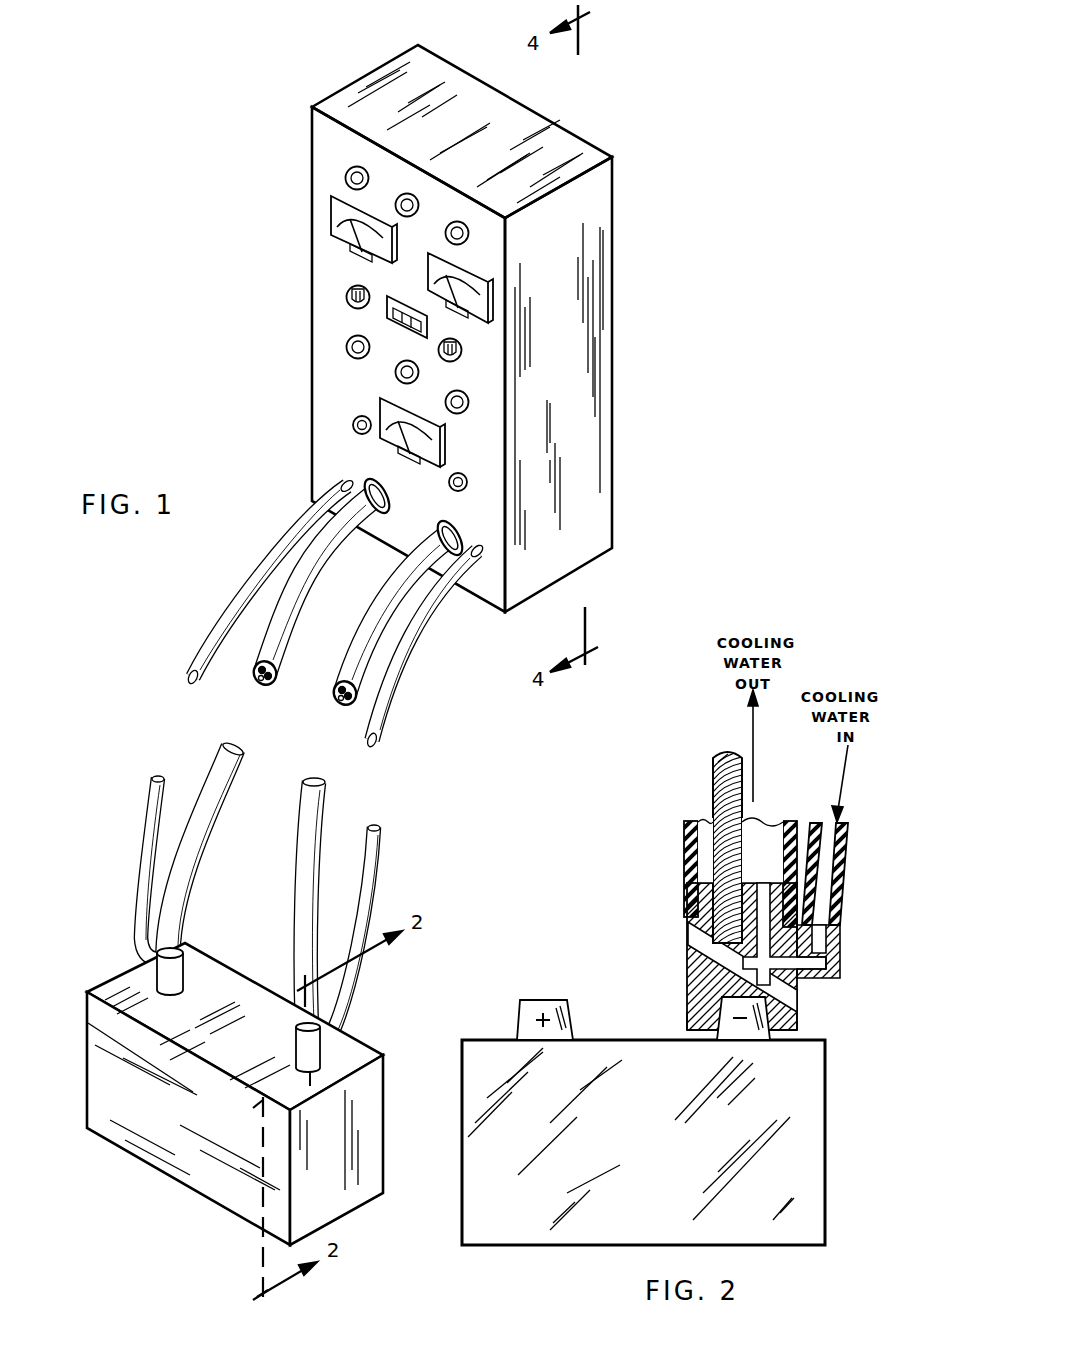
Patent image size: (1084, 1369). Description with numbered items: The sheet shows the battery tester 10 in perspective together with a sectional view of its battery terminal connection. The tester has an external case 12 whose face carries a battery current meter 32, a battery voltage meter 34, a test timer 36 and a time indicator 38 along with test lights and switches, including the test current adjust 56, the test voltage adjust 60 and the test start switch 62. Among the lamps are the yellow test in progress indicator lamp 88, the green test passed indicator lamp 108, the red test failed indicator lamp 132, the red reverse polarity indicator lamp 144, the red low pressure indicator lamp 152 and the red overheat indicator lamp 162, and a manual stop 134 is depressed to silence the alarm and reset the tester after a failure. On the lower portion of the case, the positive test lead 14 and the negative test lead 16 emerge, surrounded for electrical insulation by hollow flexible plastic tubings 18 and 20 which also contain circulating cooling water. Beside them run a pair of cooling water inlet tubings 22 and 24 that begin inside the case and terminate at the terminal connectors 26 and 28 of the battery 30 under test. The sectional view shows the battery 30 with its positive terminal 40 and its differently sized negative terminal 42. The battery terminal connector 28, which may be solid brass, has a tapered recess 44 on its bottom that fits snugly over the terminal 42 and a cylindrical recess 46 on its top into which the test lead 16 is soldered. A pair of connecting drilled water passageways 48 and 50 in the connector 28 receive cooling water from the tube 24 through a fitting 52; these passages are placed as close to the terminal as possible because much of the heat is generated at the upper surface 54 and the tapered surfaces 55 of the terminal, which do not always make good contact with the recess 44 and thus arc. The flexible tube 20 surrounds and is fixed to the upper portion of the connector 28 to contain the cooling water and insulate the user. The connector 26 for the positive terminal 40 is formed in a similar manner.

In FIG. 1, the battery tester 10 is at (650, 417).
In FIG. 1, the external case 12 is at (563, 430).
In FIG. 1, the positive test lead 14 is at (262, 678).
In FIG. 1, the negative test lead 16 is at (340, 690).
In FIG. 2, the negative test lead 16 is at (725, 790).
In FIG. 1, the hollow flexible plastic tubing 18 is at (287, 602).
In FIG. 1, the hollow flexible plastic tubing 20 is at (380, 595).
In FIG. 2, the hollow flexible plastic tubing 20 is at (690, 862).
In FIG. 1, the cooling water inlet tubing 22 is at (257, 577).
In FIG. 1, the cooling water inlet tubing 24 is at (397, 677).
In FIG. 2, the cooling water inlet tubing 24 is at (838, 870).
In FIG. 1, the terminal connector 26 is at (170, 973).
In FIG. 1, the battery terminal connector 28 is at (308, 1045).
In FIG. 2, the battery terminal connector 28 is at (700, 963).
In FIG. 1, the battery 30 is at (148, 1120).
In FIG. 2, the battery 30 is at (636, 1156).
In FIG. 1, the battery current meter 32 is at (333, 210).
In FIG. 1, the battery voltage meter 34 is at (470, 290).
In FIG. 1, the test timer 36 is at (386, 430).
In FIG. 1, the time indicator 38 is at (390, 312).
In FIG. 2, the positive terminal 40 is at (518, 1022).
In FIG. 2, the negative terminal 42 is at (740, 1034).
In FIG. 2, the tapered recess 44 is at (700, 1022).
In FIG. 2, the cylindrical recess 46 is at (705, 930).
In FIG. 2, the drilled water passageway 48 is at (758, 825).
In FIG. 2, the drilled water passageway 50 is at (800, 985).
In FIG. 2, the fitting 52 is at (835, 963).
In FIG. 2, the upper surface 54 is at (720, 990).
In FIG. 2, the tapered surfaces 55 is at (790, 1022).
In FIG. 1, the test current adjust 56 is at (347, 297).
In FIG. 1, the test voltage adjust 60 is at (462, 350).
In FIG. 1, the test start switch 62 is at (353, 425).
In FIG. 1, the test in progress indicator lamp 88 is at (396, 373).
In FIG. 1, the test passed indicator lamp 108 is at (347, 347).
In FIG. 1, the test failed indicator lamp 132 is at (470, 402).
In FIG. 1, the manual stop 134 is at (460, 495).
In FIG. 1, the reverse polarity indicator lamp 144 is at (346, 178).
In FIG. 1, the low pressure indicator lamp 152 is at (456, 222).
In FIG. 1, the overheat indicator lamp 162 is at (405, 195).